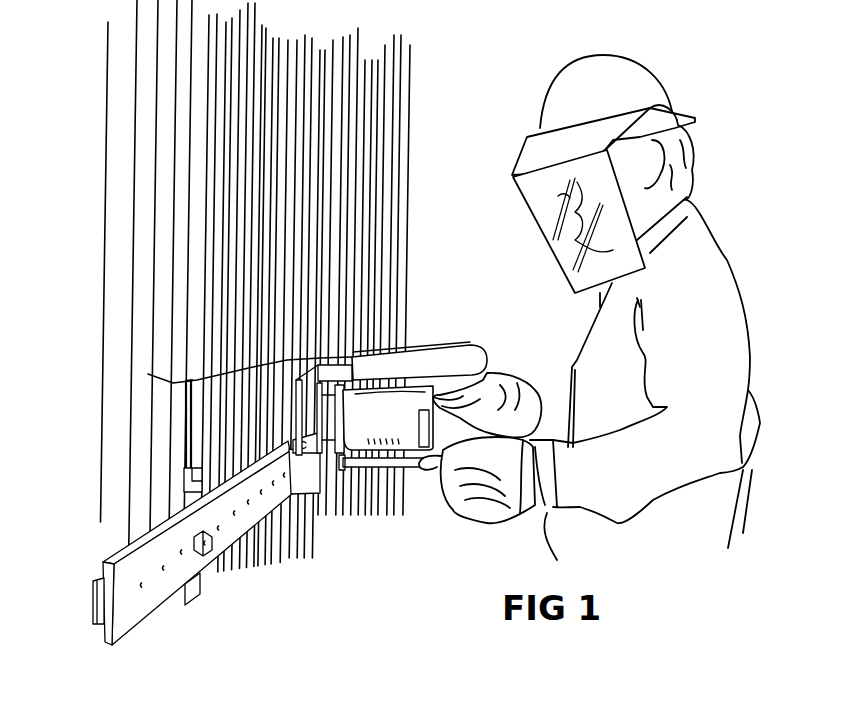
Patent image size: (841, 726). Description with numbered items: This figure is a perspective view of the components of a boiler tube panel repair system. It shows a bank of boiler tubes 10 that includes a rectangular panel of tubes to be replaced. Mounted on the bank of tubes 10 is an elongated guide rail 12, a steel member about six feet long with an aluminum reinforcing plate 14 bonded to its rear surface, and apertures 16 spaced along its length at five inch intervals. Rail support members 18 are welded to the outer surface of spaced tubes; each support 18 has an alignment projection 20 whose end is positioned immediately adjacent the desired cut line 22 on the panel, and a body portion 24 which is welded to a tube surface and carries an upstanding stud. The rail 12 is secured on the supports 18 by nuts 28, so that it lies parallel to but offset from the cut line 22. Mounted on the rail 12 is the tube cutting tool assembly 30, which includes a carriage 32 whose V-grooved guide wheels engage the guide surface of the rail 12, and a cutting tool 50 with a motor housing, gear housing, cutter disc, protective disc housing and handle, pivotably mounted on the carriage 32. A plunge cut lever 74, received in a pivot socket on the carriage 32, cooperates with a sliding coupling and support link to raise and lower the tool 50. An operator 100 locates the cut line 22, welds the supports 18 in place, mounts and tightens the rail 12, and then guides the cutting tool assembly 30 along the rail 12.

The bank of boiler tubes 10 is at (113, 240).
The guide rail 12 is at (107, 559).
The aluminum reinforcing plate 14 is at (93, 607).
The apertures 16 is at (234, 516).
The rail support members 18 is at (182, 607).
The alignment projection 20 is at (187, 440).
The cut line 22 is at (143, 373).
The body portion 24 is at (186, 484).
The nuts 28 is at (207, 557).
The tube cutting tool assembly 30 is at (435, 322).
The carriage 32 is at (307, 515).
The cutting tool 50 is at (496, 356).
The plunge cut lever 74 is at (384, 470).
The operator 100 is at (733, 260).